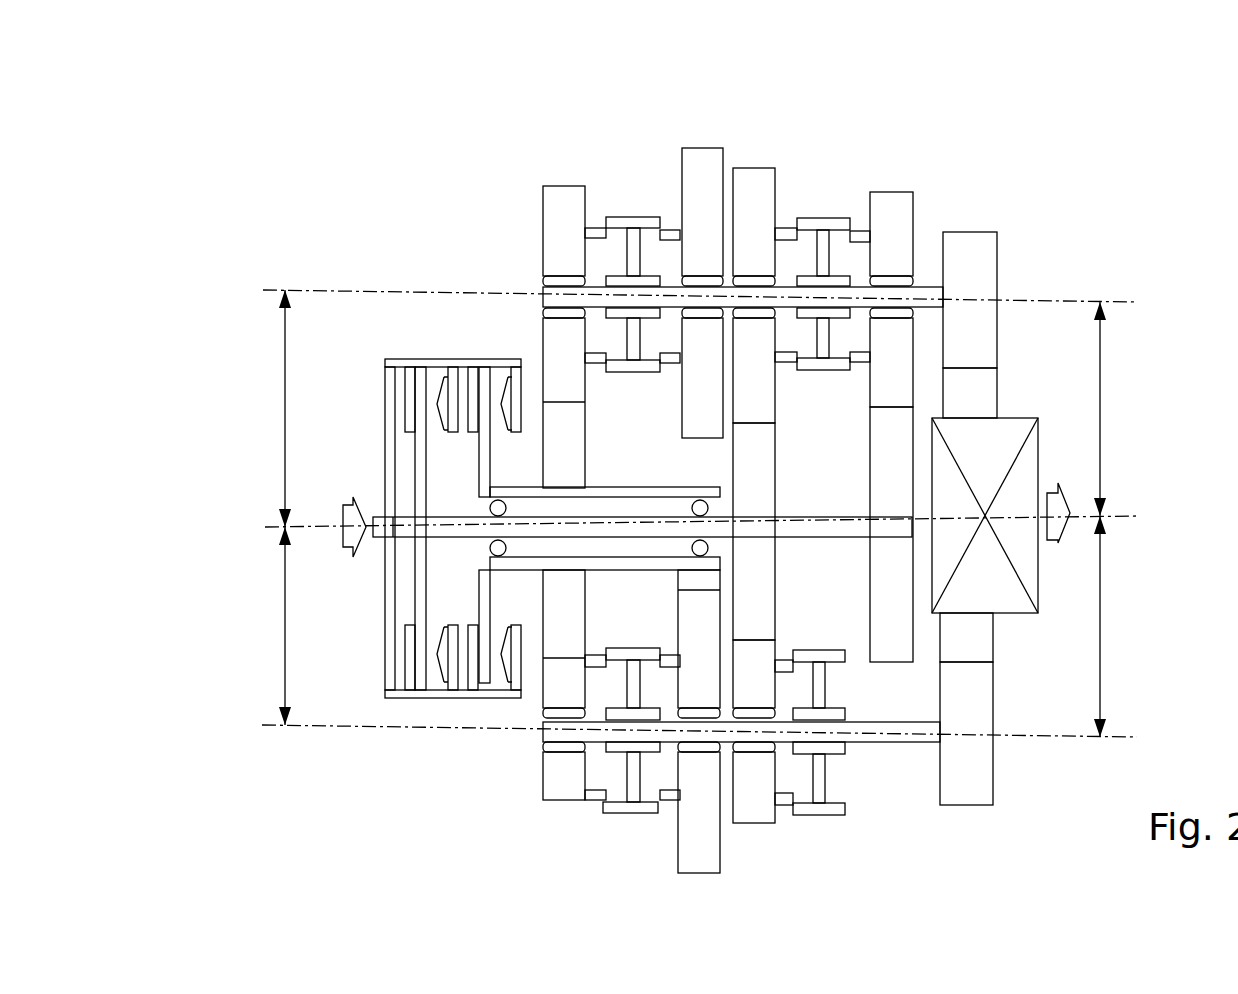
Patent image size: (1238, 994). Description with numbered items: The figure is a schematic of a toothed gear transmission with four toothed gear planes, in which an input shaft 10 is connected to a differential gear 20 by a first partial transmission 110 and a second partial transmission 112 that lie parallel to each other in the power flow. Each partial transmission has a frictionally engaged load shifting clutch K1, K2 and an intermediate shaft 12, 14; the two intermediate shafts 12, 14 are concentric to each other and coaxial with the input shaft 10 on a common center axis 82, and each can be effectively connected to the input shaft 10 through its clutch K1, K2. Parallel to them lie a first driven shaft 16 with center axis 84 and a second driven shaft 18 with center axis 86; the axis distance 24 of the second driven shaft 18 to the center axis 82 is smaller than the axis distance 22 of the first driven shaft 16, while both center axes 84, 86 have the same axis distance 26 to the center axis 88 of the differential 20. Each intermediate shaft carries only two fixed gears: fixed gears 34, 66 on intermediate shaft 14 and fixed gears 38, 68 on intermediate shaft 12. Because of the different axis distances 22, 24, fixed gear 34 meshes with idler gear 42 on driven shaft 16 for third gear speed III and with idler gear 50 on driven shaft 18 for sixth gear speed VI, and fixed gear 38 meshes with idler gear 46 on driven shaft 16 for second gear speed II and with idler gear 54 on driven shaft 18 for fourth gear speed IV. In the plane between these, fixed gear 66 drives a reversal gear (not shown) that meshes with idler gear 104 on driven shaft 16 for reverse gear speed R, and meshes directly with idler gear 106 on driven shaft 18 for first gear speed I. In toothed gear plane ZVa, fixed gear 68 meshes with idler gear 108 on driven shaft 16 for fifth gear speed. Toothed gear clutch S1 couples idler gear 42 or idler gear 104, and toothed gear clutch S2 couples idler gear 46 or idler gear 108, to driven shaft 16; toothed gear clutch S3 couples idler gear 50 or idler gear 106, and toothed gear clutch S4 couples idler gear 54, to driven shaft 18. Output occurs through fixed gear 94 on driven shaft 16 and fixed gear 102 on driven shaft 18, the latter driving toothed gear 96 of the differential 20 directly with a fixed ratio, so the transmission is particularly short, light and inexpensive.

The input shaft 10 is at (385, 525).
The intermediate shaft 12 is at (460, 532).
The intermediate shaft 14 is at (533, 563).
The first driven shaft 16 is at (920, 296).
The second driven shaft 18 is at (877, 737).
The differential gear 20 is at (1025, 463).
The axis distance 22 is at (283, 435).
The axis distance 24 is at (283, 627).
The axis distance 26 is at (1102, 428).
The fixed gear 34 is at (365, 728).
The fixed gear 38 is at (757, 600).
The idler gear 42 is at (567, 215).
The idler gear 46 is at (757, 395).
The idler gear 50 is at (560, 768).
The idler gear 54 is at (753, 800).
The fixed gear 66 is at (693, 582).
The fixed gear 68 is at (888, 423).
The center axis 82 is at (265, 527).
The center axis 84 is at (455, 290).
The center axis 86 is at (573, 628).
The center axis 88 is at (1017, 517).
The fixed gear 94 is at (978, 332).
The toothed gear 96 is at (985, 400).
The fixed gear 102 is at (972, 783).
The idler gear 104 is at (697, 378).
The idler gear 106 is at (688, 803).
The idler gear 108 is at (887, 263).
The first partial transmission 110 is at (1010, 148).
The second partial transmission 112 is at (410, 142).
The load shifting clutch K1 is at (427, 383).
The load shifting clutch K2 is at (495, 387).
The toothed gear clutch S1 is at (643, 220).
The toothed gear clutch S2 is at (812, 222).
The toothed gear clutch S3 is at (610, 805).
The toothed gear clutch S4 is at (820, 807).
The first gear speed I is at (685, 873).
The second gear speed II is at (775, 417).
The third gear speed III is at (555, 188).
The fourth gear speed IV is at (748, 823).
The sixth gear speed VI is at (555, 802).
The reverse gear speed R is at (678, 437).
The toothed gear plane ZVa is at (892, 187).